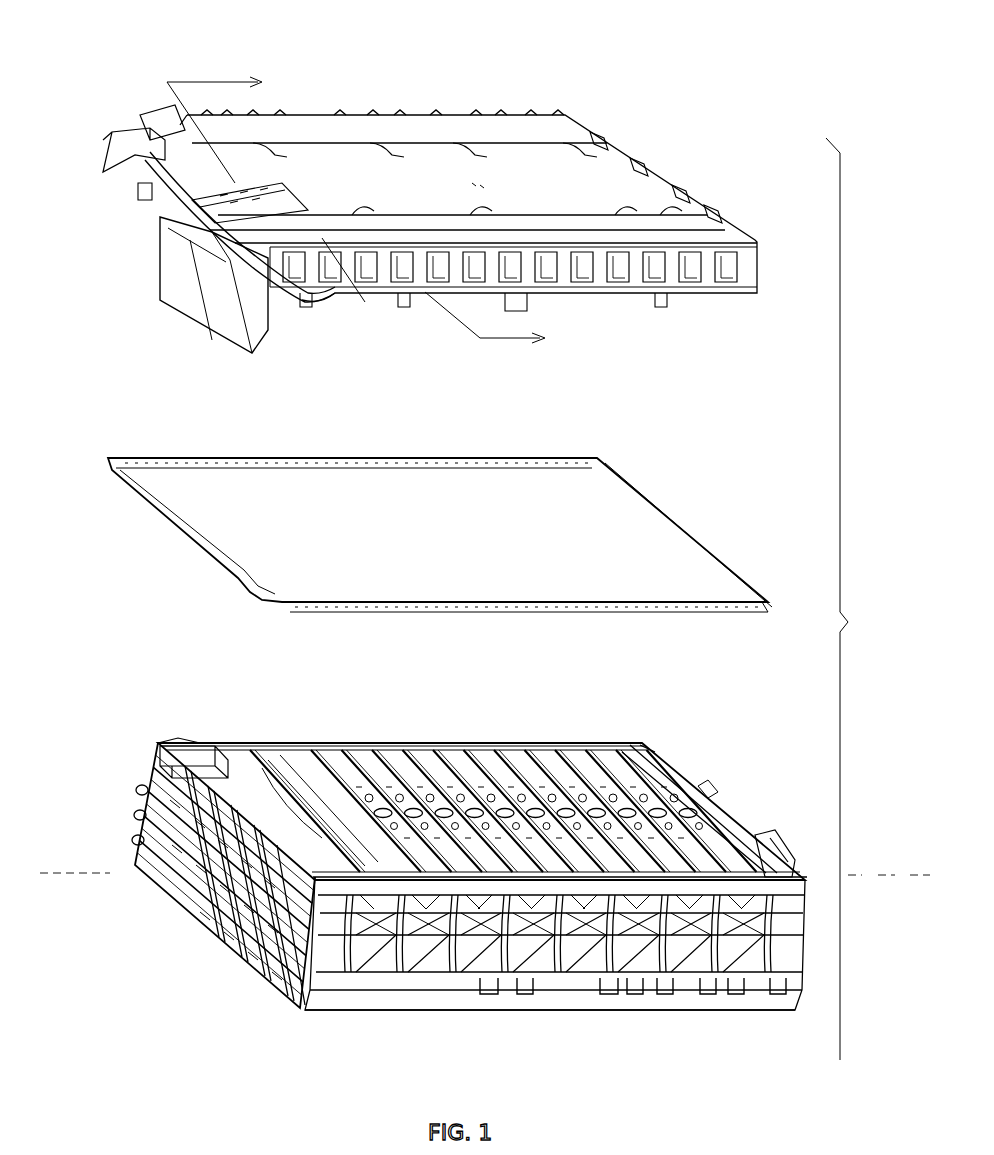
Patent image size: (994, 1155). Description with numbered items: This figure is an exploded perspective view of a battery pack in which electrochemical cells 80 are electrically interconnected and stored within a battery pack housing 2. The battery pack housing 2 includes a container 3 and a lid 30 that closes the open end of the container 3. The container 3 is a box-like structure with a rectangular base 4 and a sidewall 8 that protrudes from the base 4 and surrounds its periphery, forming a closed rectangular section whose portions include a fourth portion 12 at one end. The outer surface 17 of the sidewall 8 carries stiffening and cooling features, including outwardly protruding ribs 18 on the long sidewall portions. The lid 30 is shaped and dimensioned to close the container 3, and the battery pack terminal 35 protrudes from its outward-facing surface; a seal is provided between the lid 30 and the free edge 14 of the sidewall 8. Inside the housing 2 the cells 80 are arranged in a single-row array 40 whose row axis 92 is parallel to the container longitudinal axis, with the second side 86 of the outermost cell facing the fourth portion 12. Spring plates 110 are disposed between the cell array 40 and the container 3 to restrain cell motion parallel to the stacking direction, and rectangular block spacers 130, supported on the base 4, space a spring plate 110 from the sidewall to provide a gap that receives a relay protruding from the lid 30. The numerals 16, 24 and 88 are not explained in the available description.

The battery pack housing 2 is at (485, 599).
The container 3 is at (165, 895).
The base 4 is at (600, 1005).
The sidewall 8 is at (665, 996).
The fourth portion 12 is at (374, 211).
The free edge 14 is at (516, 885).
The frame 16 is at (883, 880).
The outer surface 17 is at (445, 1000).
The ribs 18 is at (742, 1005).
The connector tab 24 is at (160, 132).
The lid 30 is at (500, 160).
The battery pack terminal 35 is at (580, 116).
The single-row array 40 is at (660, 762).
The electrochemical cells 80 is at (316, 748).
The second side 86 is at (195, 292).
The insulating sheet 88 is at (538, 458).
The row axis 92 is at (698, 958).
The spring plates 110 is at (188, 740).
The spacers 130 is at (206, 758).